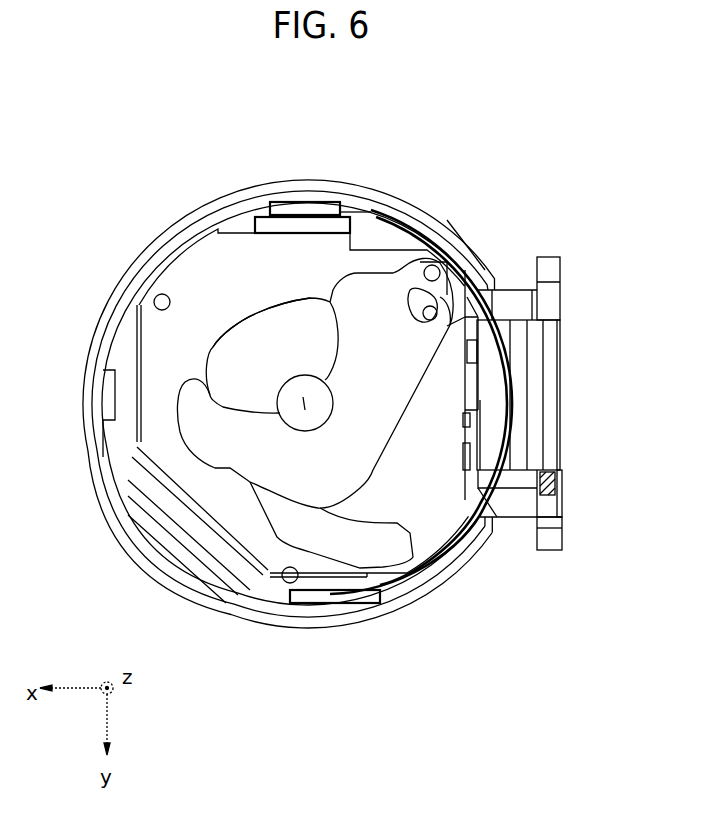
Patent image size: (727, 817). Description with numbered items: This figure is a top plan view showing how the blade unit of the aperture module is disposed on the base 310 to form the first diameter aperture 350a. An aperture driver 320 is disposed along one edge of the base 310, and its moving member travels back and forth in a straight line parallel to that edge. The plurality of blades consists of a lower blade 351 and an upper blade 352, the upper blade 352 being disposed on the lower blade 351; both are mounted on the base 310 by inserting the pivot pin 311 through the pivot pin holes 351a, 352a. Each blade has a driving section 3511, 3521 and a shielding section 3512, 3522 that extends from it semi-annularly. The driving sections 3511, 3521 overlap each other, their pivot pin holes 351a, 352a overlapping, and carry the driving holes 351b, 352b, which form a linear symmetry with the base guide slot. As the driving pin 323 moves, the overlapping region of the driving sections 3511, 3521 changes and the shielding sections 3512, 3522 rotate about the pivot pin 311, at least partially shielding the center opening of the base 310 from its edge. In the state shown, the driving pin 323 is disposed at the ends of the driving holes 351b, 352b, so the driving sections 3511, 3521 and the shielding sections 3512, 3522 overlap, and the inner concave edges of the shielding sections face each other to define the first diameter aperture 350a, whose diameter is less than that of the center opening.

The base 310 is at (423, 612).
The pivot pin 311 is at (433, 262).
The aperture driver 320 is at (566, 402).
The driving pin 323 is at (493, 303).
The first diameter aperture 350a is at (300, 413).
The lower blade 351 is at (277, 335).
The pivot pin hole 351a is at (426, 270).
The driving hole 351b is at (440, 295).
The upper blade 352 is at (382, 469).
The pivot pin hole 352a is at (422, 305).
The driving hole 352b is at (394, 283).
The driving section 3511 is at (460, 357).
The shielding section 3512 is at (295, 514).
The driving section 3521 is at (352, 288).
The shielding section 3522 is at (243, 445).